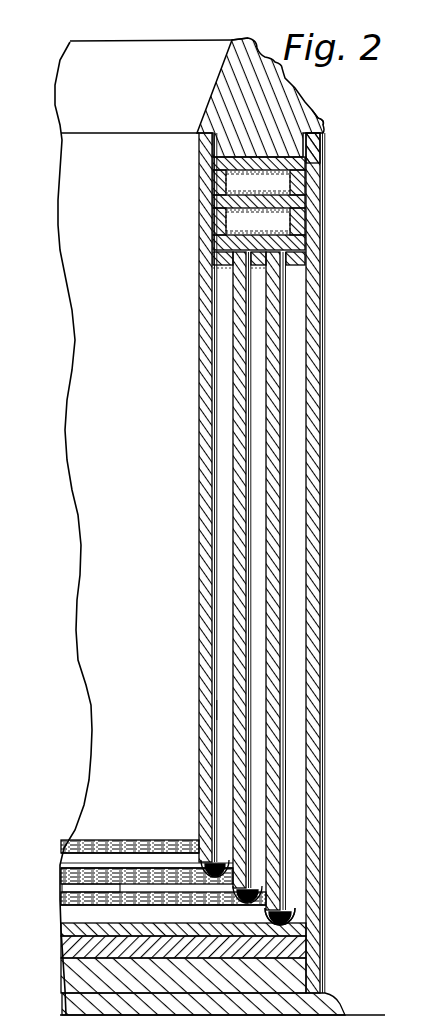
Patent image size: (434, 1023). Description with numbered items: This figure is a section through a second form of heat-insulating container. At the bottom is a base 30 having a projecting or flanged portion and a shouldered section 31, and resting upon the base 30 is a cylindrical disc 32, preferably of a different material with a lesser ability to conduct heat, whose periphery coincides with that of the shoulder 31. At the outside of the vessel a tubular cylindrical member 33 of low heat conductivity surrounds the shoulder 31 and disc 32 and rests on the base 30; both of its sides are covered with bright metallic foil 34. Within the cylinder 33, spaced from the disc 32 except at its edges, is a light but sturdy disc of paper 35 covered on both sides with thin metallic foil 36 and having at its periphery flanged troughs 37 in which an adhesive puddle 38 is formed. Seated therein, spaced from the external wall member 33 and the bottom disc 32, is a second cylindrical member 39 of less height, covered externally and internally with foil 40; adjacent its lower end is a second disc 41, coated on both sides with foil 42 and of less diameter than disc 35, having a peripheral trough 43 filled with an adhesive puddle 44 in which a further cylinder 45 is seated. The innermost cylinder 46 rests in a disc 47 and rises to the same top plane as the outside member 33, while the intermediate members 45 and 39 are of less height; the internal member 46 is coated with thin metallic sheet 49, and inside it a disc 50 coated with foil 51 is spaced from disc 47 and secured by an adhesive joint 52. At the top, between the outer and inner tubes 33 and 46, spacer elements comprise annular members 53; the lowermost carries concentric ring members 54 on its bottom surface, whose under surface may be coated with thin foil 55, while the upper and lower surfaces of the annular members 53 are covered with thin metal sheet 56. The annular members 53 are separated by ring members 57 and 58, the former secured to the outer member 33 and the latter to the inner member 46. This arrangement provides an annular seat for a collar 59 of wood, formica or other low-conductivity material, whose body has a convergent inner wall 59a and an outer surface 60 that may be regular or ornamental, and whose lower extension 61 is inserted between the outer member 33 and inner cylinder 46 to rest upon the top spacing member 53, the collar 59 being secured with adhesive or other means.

The base 30 is at (324, 1011).
The shouldered section 31 is at (297, 974).
The cylindrical disc 32 is at (300, 946).
The cylindrical member 33 is at (75, 930).
The bright metallic foil 34 is at (326, 821).
The disc of paper 35 is at (62, 893).
The thin metallic foil 36 is at (96, 915).
The flanged troughs 37 is at (294, 910).
The adhesive puddle 38 is at (291, 921).
The second cylindrical member 39 is at (277, 751).
The foil 40 is at (266, 781).
The second disc 41 is at (62, 876).
The foil 42 is at (61, 858).
The peripheral trough 43 is at (257, 883).
The adhesive puddle 44 is at (253, 892).
The cylinder 45 is at (245, 652).
The innermost cylinder 46 is at (212, 684).
The disc 47 is at (139, 845).
The thin metallic sheet 49 is at (222, 710).
The disc 50 is at (100, 870).
The foil 51 is at (162, 848).
The adhesive joint 52 is at (94, 840).
The annular members 53 is at (300, 166).
The concentric ring members 54 is at (217, 259).
The thin sheet of foil 55 is at (250, 272).
The thin sheet of metal 56 is at (236, 192).
The ring member 57 is at (302, 183).
The ring member 58 is at (219, 181).
The collar 59 is at (307, 100).
The convergent wall 59a is at (236, 47).
The outer surface 60 is at (323, 121).
The extension 61 is at (324, 144).